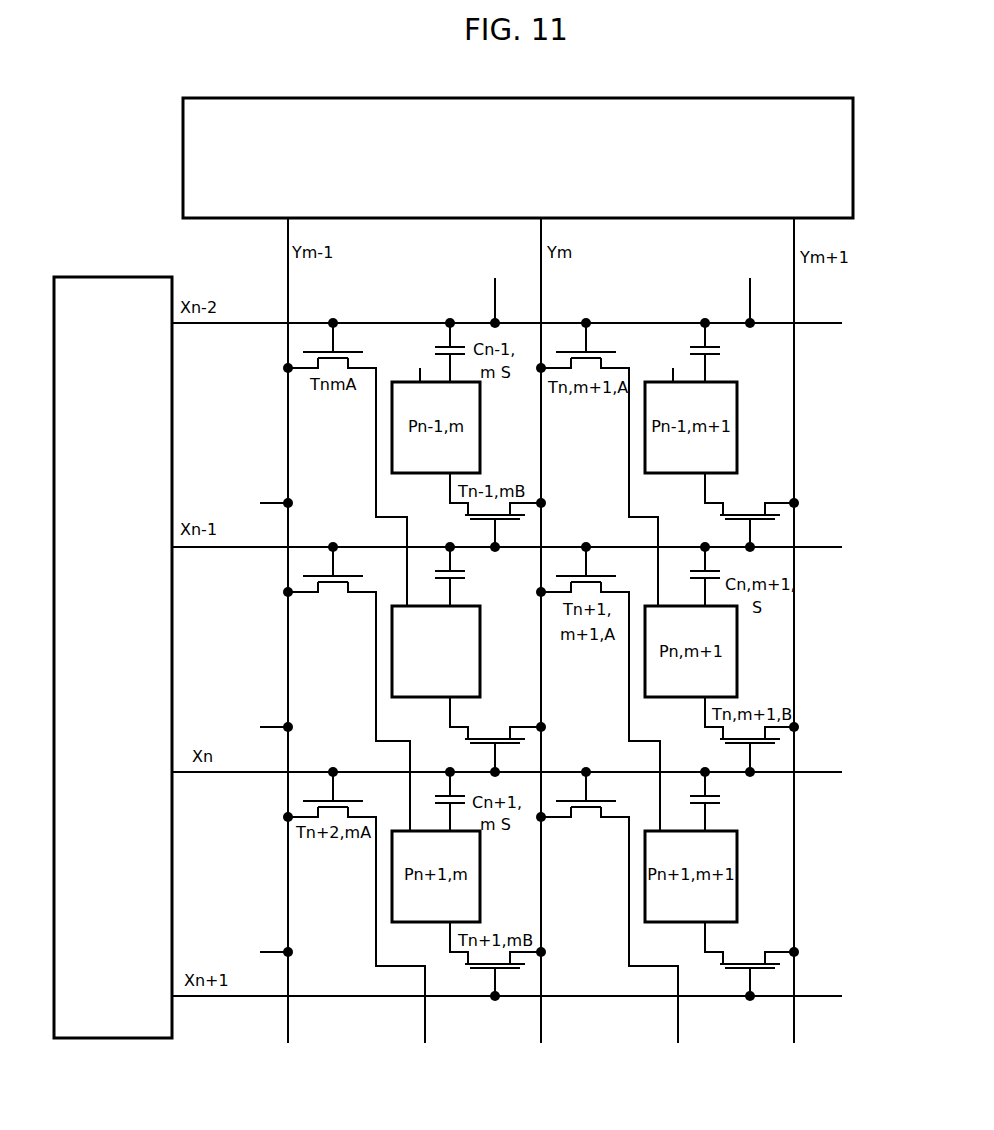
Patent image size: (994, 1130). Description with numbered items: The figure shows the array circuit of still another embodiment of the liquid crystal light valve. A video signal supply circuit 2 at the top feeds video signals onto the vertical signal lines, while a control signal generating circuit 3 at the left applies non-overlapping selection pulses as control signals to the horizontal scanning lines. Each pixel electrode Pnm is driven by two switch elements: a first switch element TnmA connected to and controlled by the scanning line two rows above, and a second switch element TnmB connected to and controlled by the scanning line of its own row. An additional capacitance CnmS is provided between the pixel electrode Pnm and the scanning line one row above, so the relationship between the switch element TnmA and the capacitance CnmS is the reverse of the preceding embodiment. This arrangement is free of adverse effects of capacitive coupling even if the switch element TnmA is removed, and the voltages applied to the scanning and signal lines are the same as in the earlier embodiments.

The video signal supply circuit 2 is at (678, 98).
The control signal generating circuit 3 is at (130, 277).
The switch element TnmA is at (349, 689).
The additional capacitance CnmS is at (476, 576).
The pixel electrode Pnm is at (436, 651).
The switch element TnmB is at (495, 734).